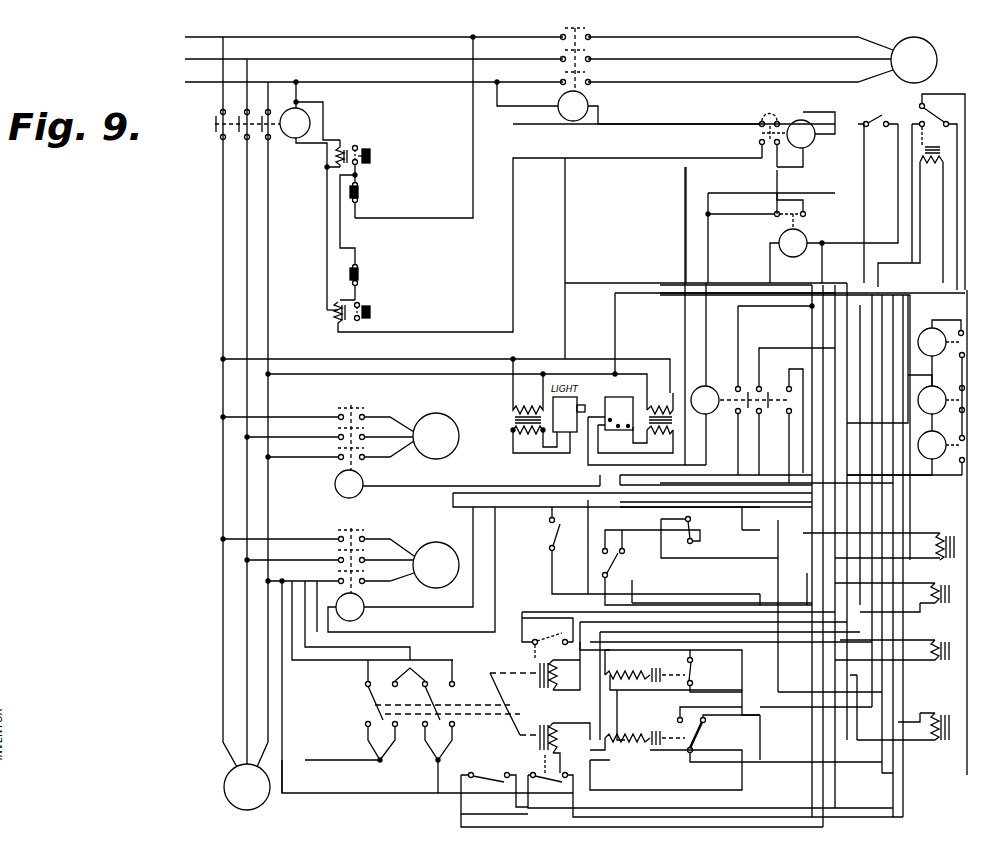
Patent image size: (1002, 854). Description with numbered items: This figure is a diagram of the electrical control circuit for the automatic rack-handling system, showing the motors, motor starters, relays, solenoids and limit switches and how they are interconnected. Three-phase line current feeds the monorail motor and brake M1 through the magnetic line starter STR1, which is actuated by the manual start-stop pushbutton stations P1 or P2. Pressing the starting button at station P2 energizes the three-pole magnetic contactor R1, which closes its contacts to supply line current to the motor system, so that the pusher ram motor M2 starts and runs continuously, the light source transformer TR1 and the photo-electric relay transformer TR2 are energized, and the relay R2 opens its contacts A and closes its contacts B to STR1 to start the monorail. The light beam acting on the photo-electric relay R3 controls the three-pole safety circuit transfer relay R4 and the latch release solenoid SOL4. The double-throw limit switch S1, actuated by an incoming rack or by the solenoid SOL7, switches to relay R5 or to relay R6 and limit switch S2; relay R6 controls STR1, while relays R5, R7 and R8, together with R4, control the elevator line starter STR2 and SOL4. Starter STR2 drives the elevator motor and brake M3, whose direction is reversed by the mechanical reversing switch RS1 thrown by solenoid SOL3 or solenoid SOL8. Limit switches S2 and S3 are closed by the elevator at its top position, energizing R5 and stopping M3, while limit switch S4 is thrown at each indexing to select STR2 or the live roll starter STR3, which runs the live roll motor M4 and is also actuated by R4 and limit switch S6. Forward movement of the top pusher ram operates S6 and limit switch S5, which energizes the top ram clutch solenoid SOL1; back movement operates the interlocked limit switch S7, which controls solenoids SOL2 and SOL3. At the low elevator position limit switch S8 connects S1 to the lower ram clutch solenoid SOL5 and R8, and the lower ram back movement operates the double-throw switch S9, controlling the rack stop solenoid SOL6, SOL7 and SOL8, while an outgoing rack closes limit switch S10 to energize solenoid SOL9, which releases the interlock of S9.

The monorail motor and brake M1 is at (914, 60).
The pusher ram motor M2 is at (247, 787).
The elevator motor and brake M3 is at (398, 560).
The live roll motor M4 is at (398, 437).
The monorail magnetic line starter STR1 is at (696, 76).
The elevator magnetic line starter STR2 is at (411, 569).
The live roll magnetic line starter STR3 is at (467, 484).
The main automatic system magnetic contactor R1 is at (277, 195).
The magnetic relay to STR1 R2 is at (674, 197).
The photo-electric relay R3 is at (647, 424).
The safety circuit transfer magnetic relay R4 is at (760, 325).
The magnetic relay to STR2 and SOL4 R5 is at (947, 378).
The magnetic relay to STR1 R6 is at (802, 203).
The magnetic relay to STR2 and SOL4 R7 is at (912, 363).
The magnetic relay to STR2 and SOL4 R8 is at (912, 453).
The monorail start-stop pushbutton station P1 is at (544, 245).
The automatic system control start-stop pushbutton station P2 is at (387, 195).
The double throw limit switch S1 is at (933, 192).
The mechanically interlocked limit switch S2 is at (715, 786).
The limit switch to R5 S3 is at (494, 794).
The double throw limit switch to STR2 or STR3 S4 is at (701, 567).
The normally open limit switch to SOL1 S5 is at (655, 547).
The normally open limit switch to STR1 S6 is at (719, 532).
The mechanically interlocked limit switch S7 is at (724, 682).
The limit switch to SOL5 and R8 S8 is at (547, 639).
The double throw mechanically interlocked limit switch S9 is at (770, 734).
The limit switch to SOL9 S10 is at (878, 192).
The mechanical reversing switch RS1 is at (453, 726).
The light source transformer TR1 is at (540, 406).
The photo-electric relay transformer TR2 is at (660, 417).
The top ram clutch solenoid SOL1 is at (878, 553).
The S7 interlock release solenoid SOL2 is at (673, 695).
The S2 interlock release solenoid SOL3 is at (565, 748).
The elevator stop latch release solenoid SOL4 is at (904, 714).
The lower ram clutch solenoid SOL5 is at (893, 600).
The rack stop solenoid SOL6 is at (893, 657).
The S1 interlock release solenoid SOL7 is at (910, 207).
The S8 interlock release solenoid SOL8 is at (560, 666).
The S9 interlock release solenoid SOL9 is at (666, 758).